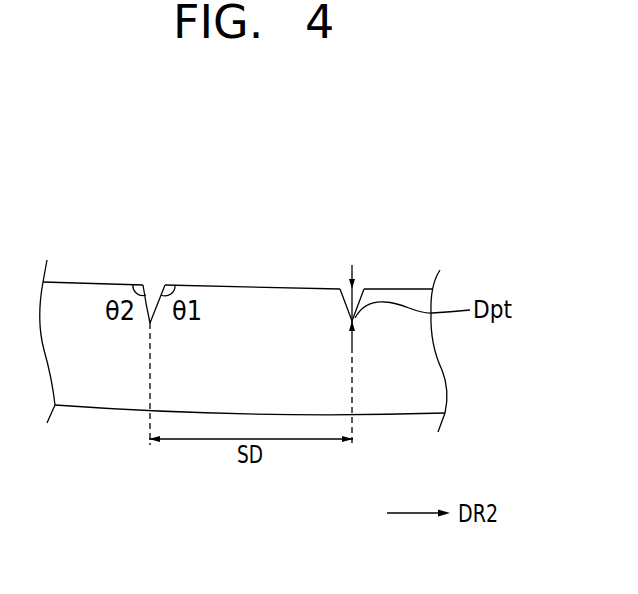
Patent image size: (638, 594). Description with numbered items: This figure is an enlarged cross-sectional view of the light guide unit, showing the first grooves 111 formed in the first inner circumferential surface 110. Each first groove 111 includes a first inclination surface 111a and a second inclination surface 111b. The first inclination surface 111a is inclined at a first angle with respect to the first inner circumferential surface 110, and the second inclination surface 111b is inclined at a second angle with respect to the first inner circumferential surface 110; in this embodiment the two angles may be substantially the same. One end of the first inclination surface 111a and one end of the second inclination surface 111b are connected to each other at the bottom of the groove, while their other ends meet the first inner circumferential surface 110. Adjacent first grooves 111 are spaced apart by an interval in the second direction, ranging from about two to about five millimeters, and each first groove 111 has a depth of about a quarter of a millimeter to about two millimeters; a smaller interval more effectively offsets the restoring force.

The first inner circumferential surface 110 is at (395, 289).
The first groove 111 is at (157, 241).
The first inclination surface 111a is at (165, 285).
The second inclination surface 111b is at (145, 285).